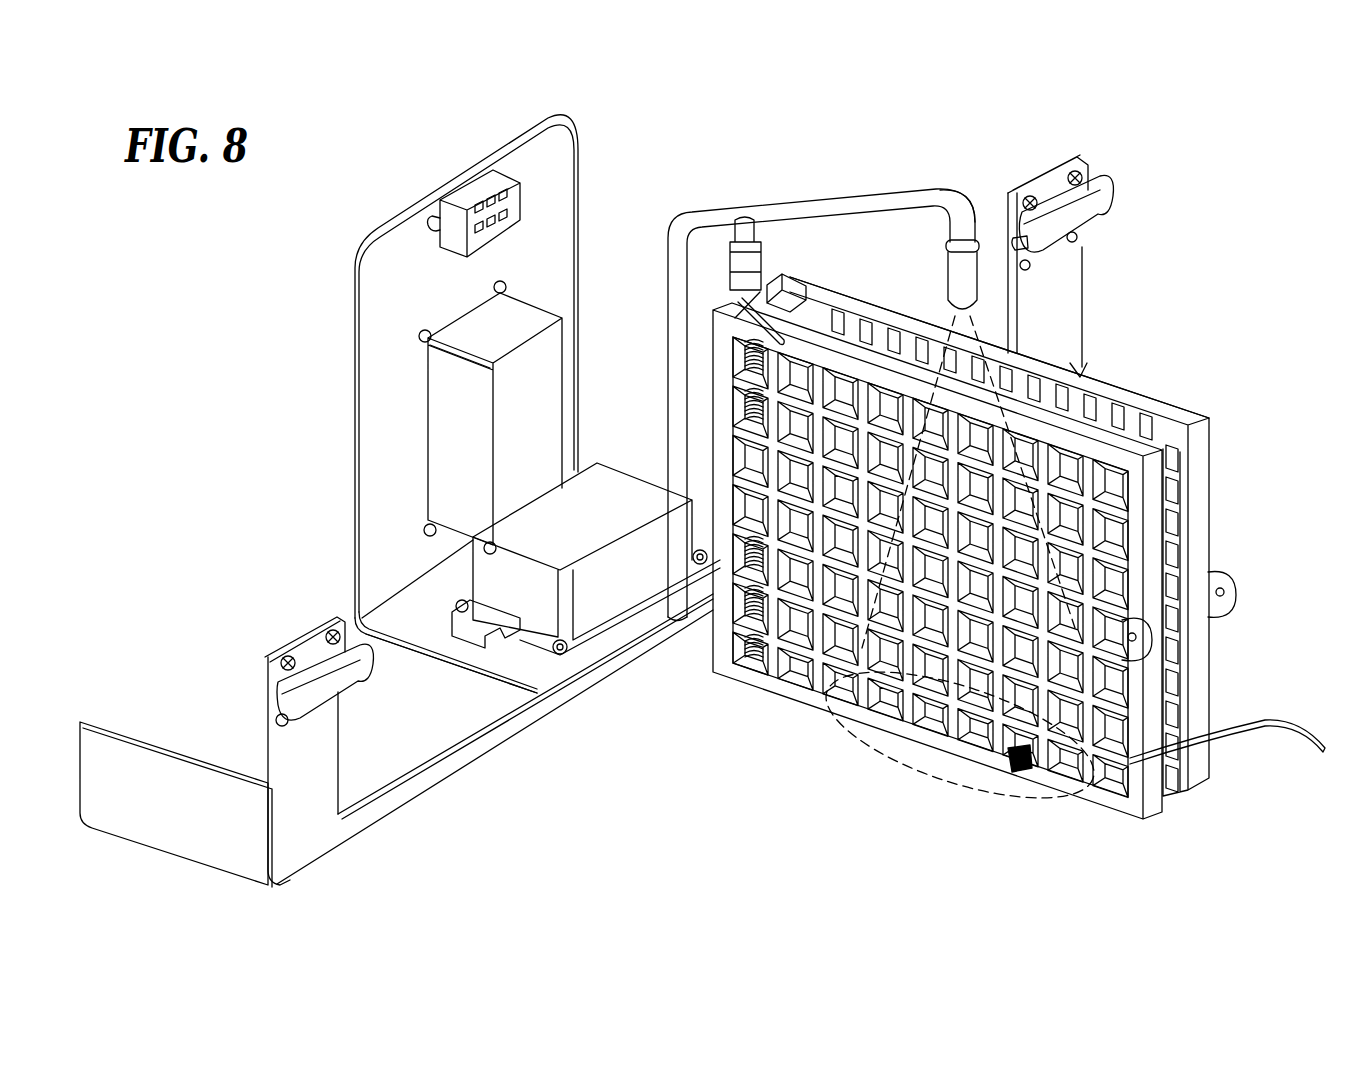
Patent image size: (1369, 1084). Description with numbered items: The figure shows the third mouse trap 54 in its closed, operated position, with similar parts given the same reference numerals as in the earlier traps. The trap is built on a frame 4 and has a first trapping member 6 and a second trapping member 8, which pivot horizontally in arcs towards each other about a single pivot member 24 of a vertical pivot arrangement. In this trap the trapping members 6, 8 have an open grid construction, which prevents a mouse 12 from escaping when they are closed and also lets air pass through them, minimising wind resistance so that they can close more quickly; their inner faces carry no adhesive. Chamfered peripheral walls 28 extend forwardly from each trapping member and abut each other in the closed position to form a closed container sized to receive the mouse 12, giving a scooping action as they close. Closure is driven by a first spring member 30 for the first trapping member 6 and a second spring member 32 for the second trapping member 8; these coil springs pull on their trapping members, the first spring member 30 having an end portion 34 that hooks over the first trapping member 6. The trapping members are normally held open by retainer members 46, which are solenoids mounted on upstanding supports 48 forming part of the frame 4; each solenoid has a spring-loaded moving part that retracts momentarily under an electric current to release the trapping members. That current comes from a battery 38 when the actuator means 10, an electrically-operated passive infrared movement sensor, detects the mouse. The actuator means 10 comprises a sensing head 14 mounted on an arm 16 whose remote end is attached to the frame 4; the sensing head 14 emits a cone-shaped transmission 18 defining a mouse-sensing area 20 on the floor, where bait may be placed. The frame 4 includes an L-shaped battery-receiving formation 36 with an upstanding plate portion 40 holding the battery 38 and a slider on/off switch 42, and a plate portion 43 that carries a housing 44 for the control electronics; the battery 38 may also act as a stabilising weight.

The frame 4 is at (150, 748).
The first trapping member 6 is at (778, 704).
The second trapping member 8 is at (1123, 388).
The actuator means 10 is at (974, 222).
The mouse 12 is at (1030, 772).
The sensing head 14 is at (968, 290).
The arm 16 is at (703, 210).
The cone-shaped transmission 18 is at (828, 757).
The mouse-sensing area 20 is at (880, 768).
The single pivot member 24 is at (752, 232).
The peripheral walls 28 is at (1200, 456).
The first spring member 30 is at (767, 305).
The second spring member 32 is at (742, 648).
The end portion 34 is at (748, 322).
The battery-receiving formation 36 is at (355, 352).
The battery 38 is at (536, 428).
The upstanding plate portion 40 is at (410, 430).
The on/off switch 42 is at (478, 195).
The plate portion 43 is at (423, 627).
The housing 44 is at (595, 537).
The retainer member 46 is at (1093, 203).
The upstanding supports 48 is at (1067, 277).
The third mouse trap 54 is at (205, 285).